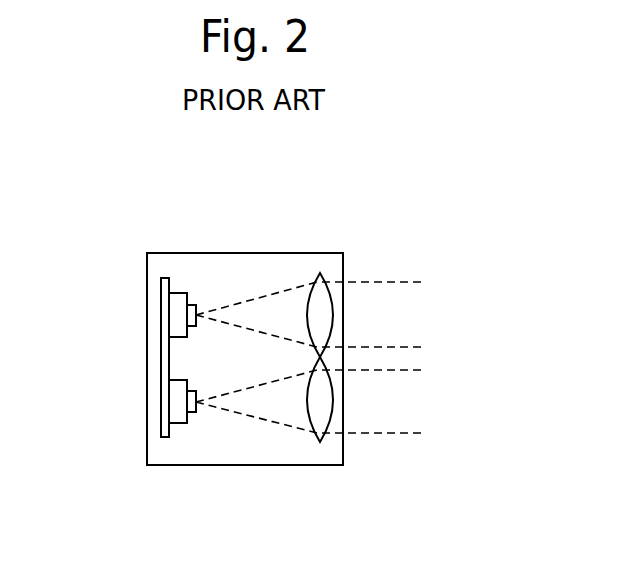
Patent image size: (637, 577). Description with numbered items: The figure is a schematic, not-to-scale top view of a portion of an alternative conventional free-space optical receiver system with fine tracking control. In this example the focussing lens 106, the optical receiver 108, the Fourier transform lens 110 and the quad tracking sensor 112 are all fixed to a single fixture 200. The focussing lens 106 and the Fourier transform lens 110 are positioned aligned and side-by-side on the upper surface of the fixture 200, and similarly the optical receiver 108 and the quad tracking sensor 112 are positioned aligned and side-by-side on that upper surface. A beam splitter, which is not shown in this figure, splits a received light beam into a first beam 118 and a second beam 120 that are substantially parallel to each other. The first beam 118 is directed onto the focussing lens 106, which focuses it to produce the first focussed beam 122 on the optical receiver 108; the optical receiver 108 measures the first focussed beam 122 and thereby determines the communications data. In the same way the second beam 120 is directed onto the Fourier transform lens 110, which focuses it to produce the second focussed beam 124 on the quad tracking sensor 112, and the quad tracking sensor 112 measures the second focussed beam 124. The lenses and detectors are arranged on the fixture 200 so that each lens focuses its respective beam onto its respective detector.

The fixture 200 is at (185, 252).
The optical receiver 108 is at (178, 315).
The quad tracking sensor 112 is at (178, 400).
The first focussed beam 122 is at (265, 307).
The second focussed beam 124 is at (253, 408).
The focussing lens 106 is at (321, 280).
The Fourier transform lens 110 is at (320, 410).
The first beam 118 is at (380, 307).
The second beam 120 is at (378, 416).